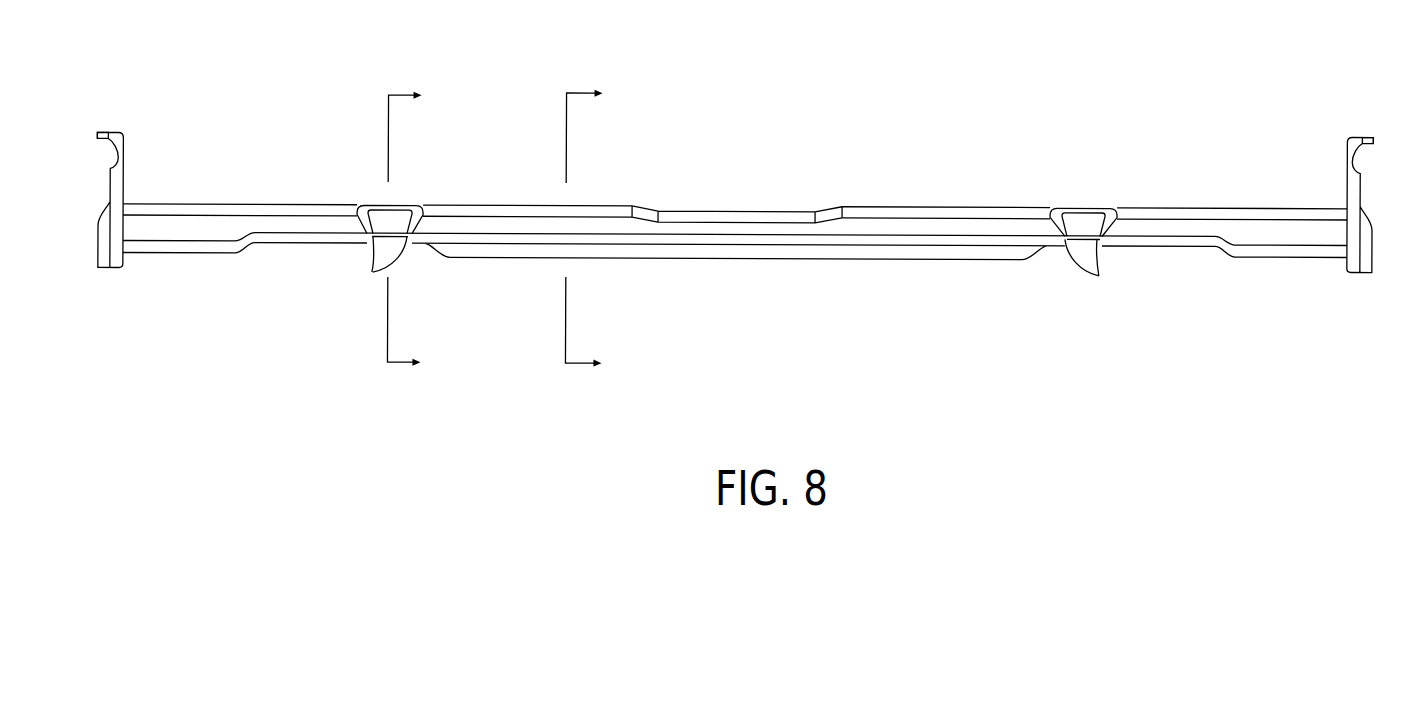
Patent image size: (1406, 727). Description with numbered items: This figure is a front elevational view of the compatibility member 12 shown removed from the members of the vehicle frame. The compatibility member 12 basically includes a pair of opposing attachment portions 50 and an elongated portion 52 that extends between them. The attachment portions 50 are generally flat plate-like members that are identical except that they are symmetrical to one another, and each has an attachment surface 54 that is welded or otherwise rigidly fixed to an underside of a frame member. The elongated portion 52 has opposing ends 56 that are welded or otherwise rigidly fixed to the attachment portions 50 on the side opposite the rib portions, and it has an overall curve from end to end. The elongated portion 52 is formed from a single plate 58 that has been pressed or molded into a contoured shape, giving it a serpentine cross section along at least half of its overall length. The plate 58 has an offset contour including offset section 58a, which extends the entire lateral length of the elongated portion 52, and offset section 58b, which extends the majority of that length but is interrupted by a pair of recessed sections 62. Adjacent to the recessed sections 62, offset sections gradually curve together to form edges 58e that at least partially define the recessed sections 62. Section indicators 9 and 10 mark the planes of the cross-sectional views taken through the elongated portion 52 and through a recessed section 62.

The compatibility member 12 is at (977, 110).
The attachment portion 50 is at (107, 264).
The elongated portion 52 is at (965, 256).
The attachment surface 54 is at (102, 135).
The opposing ends 56 is at (132, 205).
The plate 58 is at (725, 216).
The offset section 58a is at (867, 206).
The offset section 58b is at (910, 234).
The edges 58e is at (372, 274).
The recessed section 62 is at (388, 223).
The section line 9- 9 is at (596, 231).
The section line 10- 10 is at (425, 228).